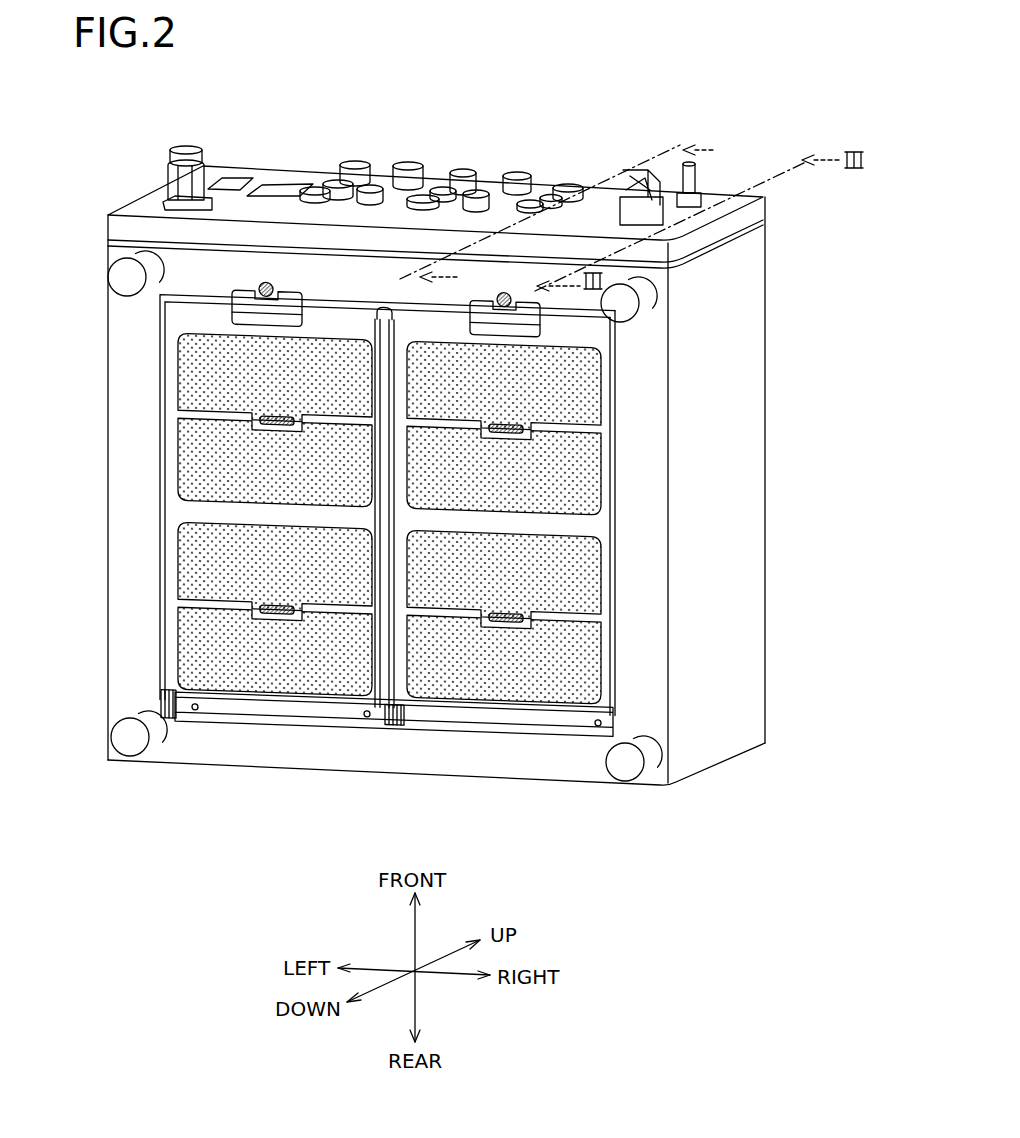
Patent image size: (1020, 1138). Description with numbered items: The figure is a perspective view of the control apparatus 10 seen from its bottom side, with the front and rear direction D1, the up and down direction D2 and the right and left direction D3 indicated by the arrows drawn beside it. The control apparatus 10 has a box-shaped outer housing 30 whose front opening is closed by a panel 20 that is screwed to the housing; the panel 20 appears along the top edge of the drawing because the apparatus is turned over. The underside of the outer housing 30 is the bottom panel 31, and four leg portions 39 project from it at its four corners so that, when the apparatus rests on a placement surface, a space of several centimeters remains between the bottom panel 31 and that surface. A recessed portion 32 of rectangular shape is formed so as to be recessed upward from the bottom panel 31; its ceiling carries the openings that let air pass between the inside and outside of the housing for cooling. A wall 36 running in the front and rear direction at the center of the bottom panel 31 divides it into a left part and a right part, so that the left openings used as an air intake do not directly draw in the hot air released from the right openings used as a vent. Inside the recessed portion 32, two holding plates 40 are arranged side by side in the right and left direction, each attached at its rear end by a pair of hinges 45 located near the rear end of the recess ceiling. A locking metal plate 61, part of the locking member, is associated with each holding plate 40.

The control apparatus 10 is at (565, 85).
The panel 20 is at (242, 185).
The outer housing 30 is at (767, 517).
The bottom panel 31 is at (657, 407).
The recessed portion 32 is at (620, 588).
The wall 36 is at (442, 713).
The leg portions 39 is at (120, 283).
The holding plate 40 is at (160, 477).
The hinges 45 is at (175, 715).
The locking metal plate 61 is at (243, 292).
The front and rear direction D1 is at (407, 942).
The up and down direction D2 is at (388, 985).
The right and left direction D3 is at (450, 975).